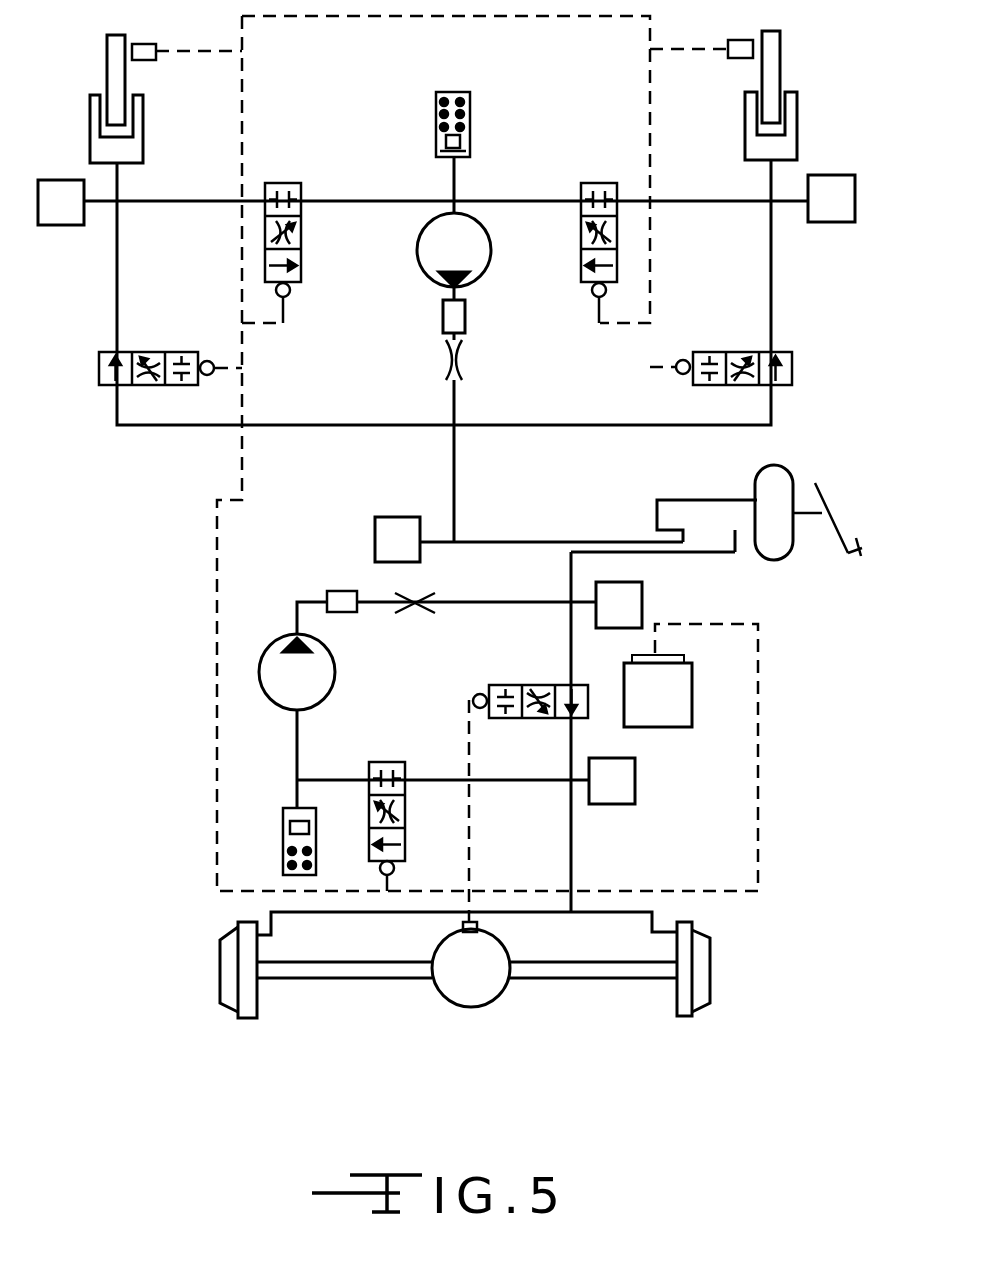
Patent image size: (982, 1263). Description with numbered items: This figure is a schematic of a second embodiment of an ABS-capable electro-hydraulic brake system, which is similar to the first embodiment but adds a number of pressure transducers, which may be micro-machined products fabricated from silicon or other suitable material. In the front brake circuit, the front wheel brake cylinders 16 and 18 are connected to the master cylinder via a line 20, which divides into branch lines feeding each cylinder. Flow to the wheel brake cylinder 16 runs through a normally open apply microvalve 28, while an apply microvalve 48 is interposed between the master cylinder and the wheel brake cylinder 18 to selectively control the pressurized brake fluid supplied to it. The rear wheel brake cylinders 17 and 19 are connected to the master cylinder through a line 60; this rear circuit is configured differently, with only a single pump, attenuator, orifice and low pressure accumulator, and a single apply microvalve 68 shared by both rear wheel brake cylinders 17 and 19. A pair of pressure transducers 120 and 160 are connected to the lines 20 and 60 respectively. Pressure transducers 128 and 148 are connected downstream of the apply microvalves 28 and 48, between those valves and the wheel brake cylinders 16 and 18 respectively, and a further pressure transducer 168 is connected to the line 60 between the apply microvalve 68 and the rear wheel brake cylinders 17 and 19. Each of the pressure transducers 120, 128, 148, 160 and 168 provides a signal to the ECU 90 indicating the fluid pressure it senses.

The front wheel brake cylinder 16 is at (167, 131).
The front wheel brake cylinder 18 is at (745, 141).
The rear wheel brake cylinder 17 is at (245, 925).
The rear wheel brake cylinder 19 is at (684, 920).
The line 20 is at (503, 542).
The apply microvalve 28 is at (155, 352).
The apply microvalve 48 is at (697, 352).
The line 60 is at (651, 553).
The apply microvalve 68 is at (497, 685).
The ECU 90 is at (692, 690).
The pressure transducer 120 is at (376, 517).
The pressure transducer 128 is at (55, 226).
The pressure transducer 148 is at (826, 223).
The pressure transducer 160 is at (645, 603).
The pressure transducer 168 is at (637, 793).